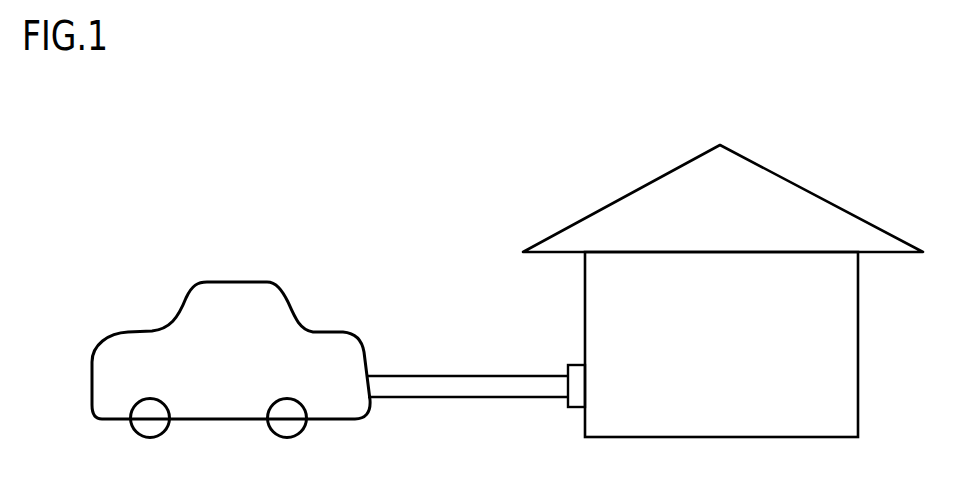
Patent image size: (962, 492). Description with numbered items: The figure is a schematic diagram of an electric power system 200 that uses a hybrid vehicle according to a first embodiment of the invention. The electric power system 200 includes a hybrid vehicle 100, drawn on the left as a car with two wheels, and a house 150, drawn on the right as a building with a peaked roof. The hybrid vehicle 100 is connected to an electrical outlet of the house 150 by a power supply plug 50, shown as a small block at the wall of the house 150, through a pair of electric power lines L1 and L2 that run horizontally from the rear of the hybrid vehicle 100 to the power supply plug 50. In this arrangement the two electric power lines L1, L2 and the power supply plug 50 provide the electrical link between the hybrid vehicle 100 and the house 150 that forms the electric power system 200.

The electric power system 200 is at (180, 134).
The hybrid vehicle 100 is at (237, 281).
The house 150 is at (801, 186).
The power supply plug 50 is at (581, 362).
The electric power line L1 is at (439, 373).
The electric power line L2 is at (425, 400).